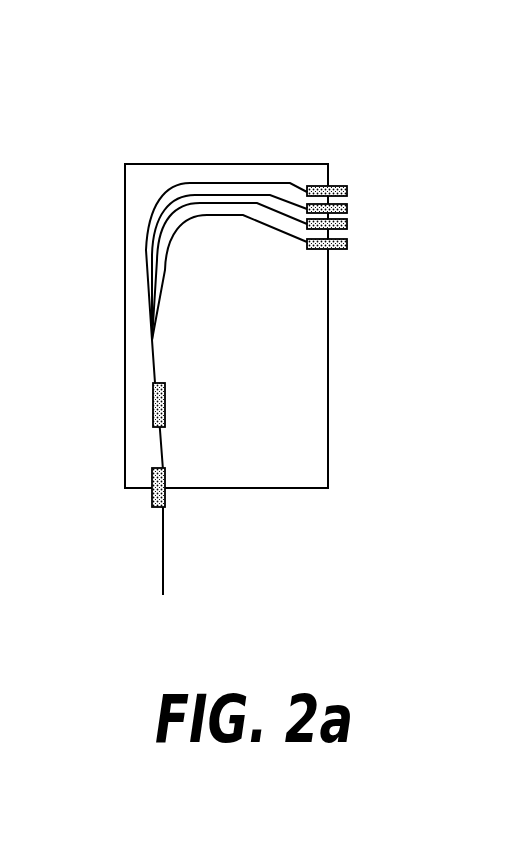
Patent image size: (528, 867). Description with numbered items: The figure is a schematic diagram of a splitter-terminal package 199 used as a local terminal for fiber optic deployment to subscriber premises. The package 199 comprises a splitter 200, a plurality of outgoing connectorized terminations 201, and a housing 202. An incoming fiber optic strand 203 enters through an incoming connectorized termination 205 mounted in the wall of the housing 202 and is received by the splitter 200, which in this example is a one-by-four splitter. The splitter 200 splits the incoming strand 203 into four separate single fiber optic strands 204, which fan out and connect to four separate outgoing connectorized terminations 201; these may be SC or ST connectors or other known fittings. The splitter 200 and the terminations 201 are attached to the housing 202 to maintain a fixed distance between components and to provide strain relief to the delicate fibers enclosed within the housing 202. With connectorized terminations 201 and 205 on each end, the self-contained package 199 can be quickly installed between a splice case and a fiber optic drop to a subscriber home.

The splitter-terminal package 199 is at (224, 142).
The splitter 200 is at (153, 405).
The outgoing connectorized terminations 201 is at (365, 184).
The housing 202 is at (329, 452).
The incoming fiber optic strand 203 is at (163, 555).
The single fiber optic strands 204 is at (152, 341).
The incoming connectorized termination 205 is at (165, 500).